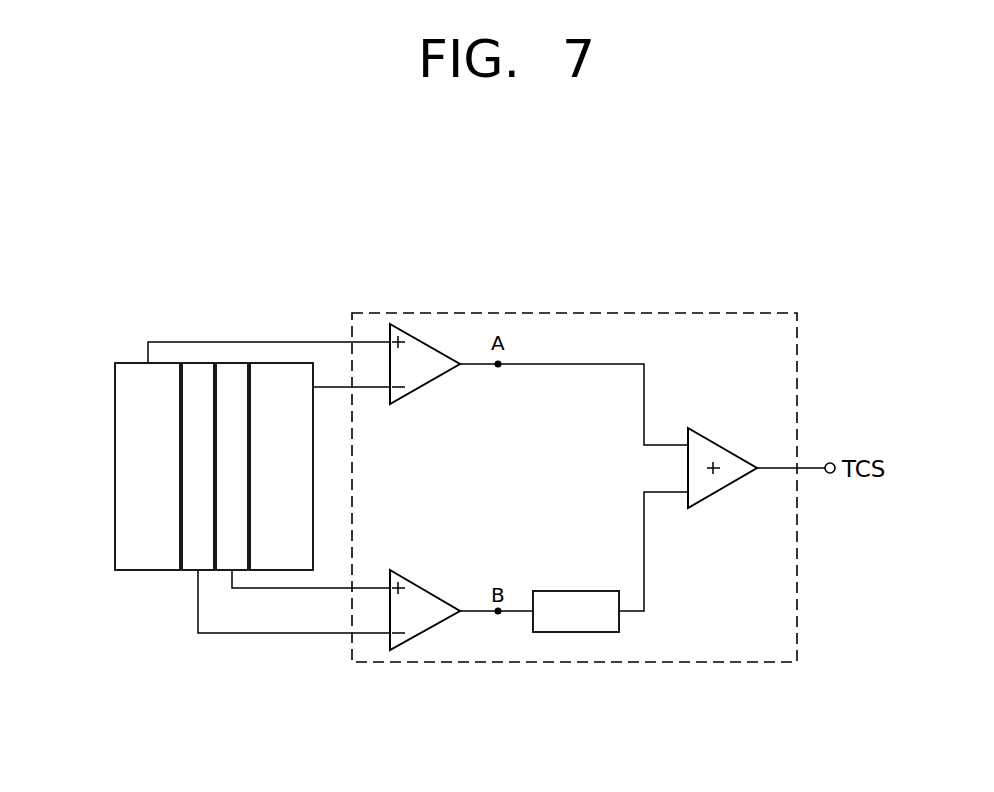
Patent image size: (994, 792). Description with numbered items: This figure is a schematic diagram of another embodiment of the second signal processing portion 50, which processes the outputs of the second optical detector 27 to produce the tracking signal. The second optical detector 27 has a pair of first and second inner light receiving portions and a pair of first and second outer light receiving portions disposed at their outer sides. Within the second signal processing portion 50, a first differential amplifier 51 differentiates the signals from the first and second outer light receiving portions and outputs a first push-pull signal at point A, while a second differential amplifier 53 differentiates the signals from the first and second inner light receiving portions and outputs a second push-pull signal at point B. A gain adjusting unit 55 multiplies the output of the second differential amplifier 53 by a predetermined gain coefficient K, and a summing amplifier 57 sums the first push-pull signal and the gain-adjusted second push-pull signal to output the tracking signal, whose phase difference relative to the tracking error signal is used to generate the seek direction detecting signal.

The second optical detector 27 is at (109, 361).
The second signal processing portion 50 is at (703, 301).
The first differential amplifier 51 is at (430, 386).
The second differential amplifier 53 is at (428, 588).
The gain adjusting unit 55 is at (578, 591).
The summing amplifier 57 is at (722, 445).